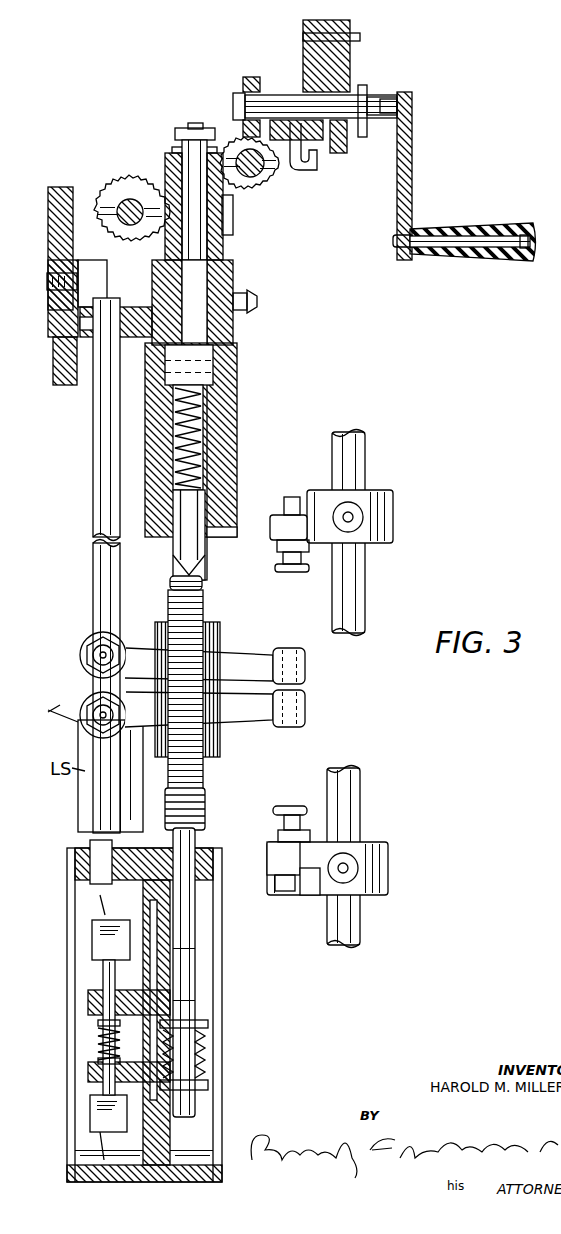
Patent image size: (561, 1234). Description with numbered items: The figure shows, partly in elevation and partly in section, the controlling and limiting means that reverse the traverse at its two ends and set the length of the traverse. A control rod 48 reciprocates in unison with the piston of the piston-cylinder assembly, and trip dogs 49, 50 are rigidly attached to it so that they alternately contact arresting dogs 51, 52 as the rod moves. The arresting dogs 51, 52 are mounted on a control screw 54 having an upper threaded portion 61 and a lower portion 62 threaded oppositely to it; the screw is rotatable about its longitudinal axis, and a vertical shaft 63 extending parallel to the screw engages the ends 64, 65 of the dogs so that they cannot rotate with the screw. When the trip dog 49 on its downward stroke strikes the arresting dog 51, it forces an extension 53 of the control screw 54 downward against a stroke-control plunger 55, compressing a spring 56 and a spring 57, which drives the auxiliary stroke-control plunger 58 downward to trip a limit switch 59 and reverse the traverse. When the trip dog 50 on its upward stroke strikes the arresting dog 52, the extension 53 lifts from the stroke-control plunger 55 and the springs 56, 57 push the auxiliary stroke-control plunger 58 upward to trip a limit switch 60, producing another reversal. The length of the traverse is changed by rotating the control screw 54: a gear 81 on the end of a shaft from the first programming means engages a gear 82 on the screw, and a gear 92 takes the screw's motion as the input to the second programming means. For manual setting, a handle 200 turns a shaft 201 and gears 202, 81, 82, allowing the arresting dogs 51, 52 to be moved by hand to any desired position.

The handle 200 is at (495, 222).
The shaft 201 is at (275, 104).
The gear 202 is at (252, 77).
The gear 81 is at (228, 145).
The gear 82 is at (164, 160).
The gear 92 is at (109, 186).
The vertical shaft 63 is at (105, 463).
The end of arresting dog 64 is at (85, 644).
The end of arresting dog 65 is at (85, 706).
The arresting dog 51 is at (307, 672).
The arresting dog 52 is at (307, 708).
The control screw 54 is at (198, 784).
The upper threaded portion 61 is at (172, 582).
The lower portion 62 is at (200, 808).
The control rod 48 is at (355, 470).
The trip dog 49 is at (393, 520).
The trip dog 50 is at (382, 876).
The extension of control screw 53 is at (186, 918).
The limit switch 60 is at (92, 937).
The limit switch 59 is at (90, 1107).
The spring 57 is at (100, 1033).
The auxiliary stroke-control plunger 58 is at (98, 1052).
The stroke-control plunger 55 is at (196, 1052).
The spring 56 is at (205, 1072).